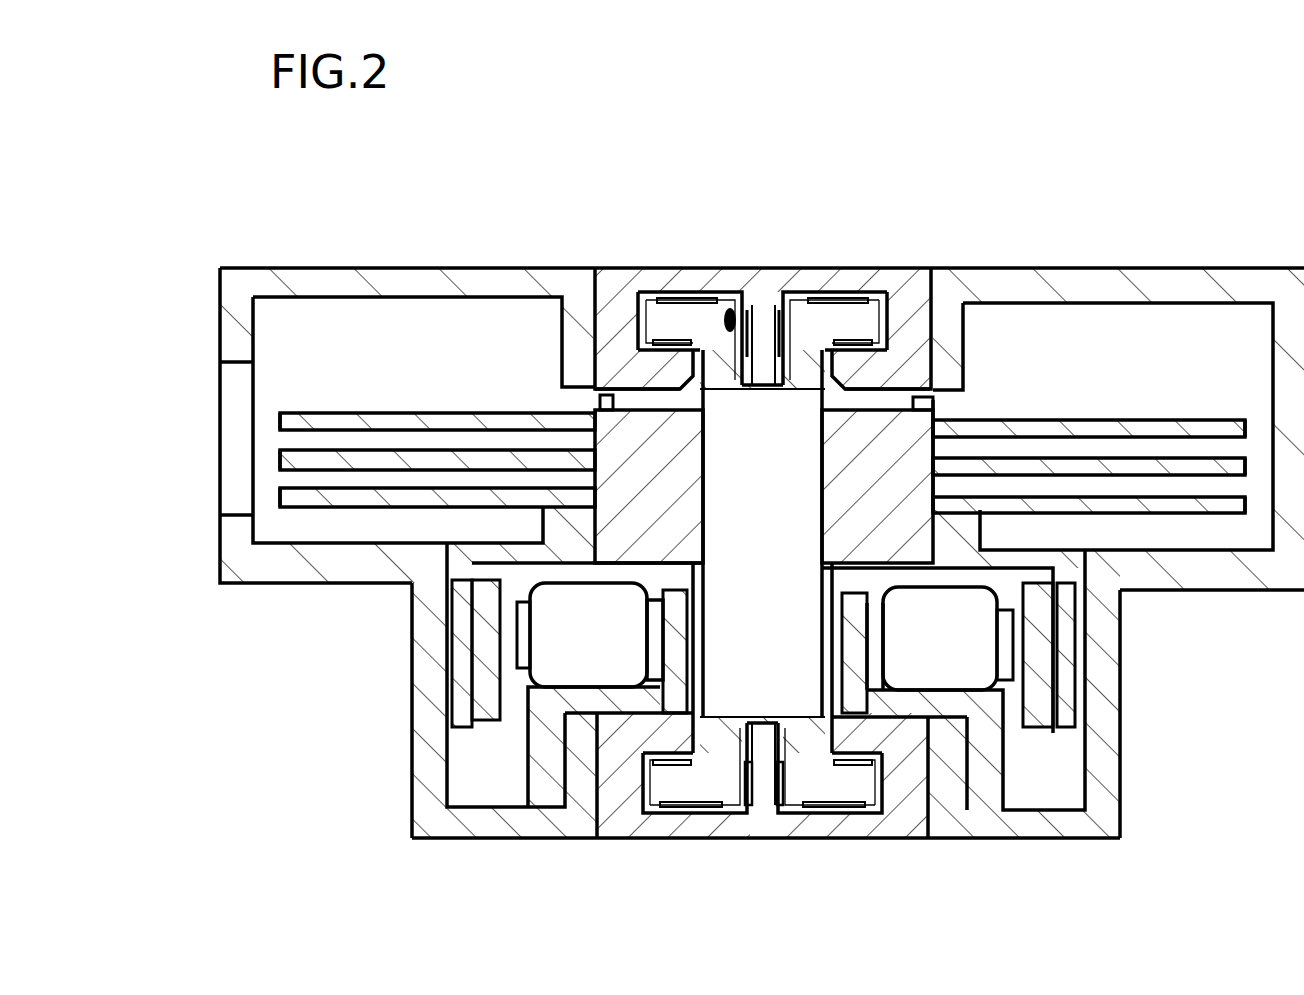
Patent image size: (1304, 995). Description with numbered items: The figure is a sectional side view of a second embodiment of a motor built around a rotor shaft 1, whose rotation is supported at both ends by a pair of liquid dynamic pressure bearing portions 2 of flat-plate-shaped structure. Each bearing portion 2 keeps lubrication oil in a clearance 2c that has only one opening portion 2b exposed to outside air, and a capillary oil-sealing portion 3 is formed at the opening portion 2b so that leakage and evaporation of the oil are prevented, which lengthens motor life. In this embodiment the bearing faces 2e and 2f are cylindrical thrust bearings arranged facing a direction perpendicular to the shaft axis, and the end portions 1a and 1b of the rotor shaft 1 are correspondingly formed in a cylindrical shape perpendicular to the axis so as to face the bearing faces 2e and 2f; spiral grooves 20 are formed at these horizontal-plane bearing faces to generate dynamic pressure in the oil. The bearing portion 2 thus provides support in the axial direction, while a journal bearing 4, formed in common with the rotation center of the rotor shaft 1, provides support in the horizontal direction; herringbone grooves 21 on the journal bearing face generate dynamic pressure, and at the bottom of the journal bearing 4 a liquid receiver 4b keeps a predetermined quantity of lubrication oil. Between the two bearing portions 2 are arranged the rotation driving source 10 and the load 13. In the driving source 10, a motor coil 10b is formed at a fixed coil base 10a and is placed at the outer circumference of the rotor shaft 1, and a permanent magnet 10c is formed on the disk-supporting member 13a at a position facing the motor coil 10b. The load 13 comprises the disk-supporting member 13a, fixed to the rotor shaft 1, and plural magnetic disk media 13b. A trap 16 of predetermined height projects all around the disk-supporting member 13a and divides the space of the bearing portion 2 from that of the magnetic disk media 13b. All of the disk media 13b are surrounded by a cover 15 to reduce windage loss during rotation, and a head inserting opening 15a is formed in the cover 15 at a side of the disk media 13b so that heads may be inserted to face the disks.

The rotor shaft 1 is at (742, 517).
The end portion of the rotor shaft 1a is at (763, 300).
The end portion of the rotor shaft 1b is at (762, 770).
The liquid dynamic pressure bearing portion 2 is at (910, 303).
The opening portion 2b is at (822, 405).
The clearance 2c is at (878, 290).
The bearing face 2e is at (645, 292).
The bearing face 2f is at (642, 397).
The capillary oil-sealing portion 3 is at (700, 400).
The journal bearing 4 is at (752, 343).
The liquid receiver 4b is at (760, 388).
The driving source 10 is at (512, 728).
The coil base 10a is at (510, 800).
The motor coil 10b is at (462, 718).
The permanent magnet 10c is at (480, 650).
The load 13 is at (422, 362).
The disk-supporting member 13a is at (937, 448).
The magnetic disk media 13b is at (392, 505).
The cover 15 is at (1198, 292).
The head inserting opening 15a is at (243, 455).
The trap 16 is at (605, 395).
The spiral grooves 20 is at (655, 342).
The herringbone grooves 21 is at (728, 305).